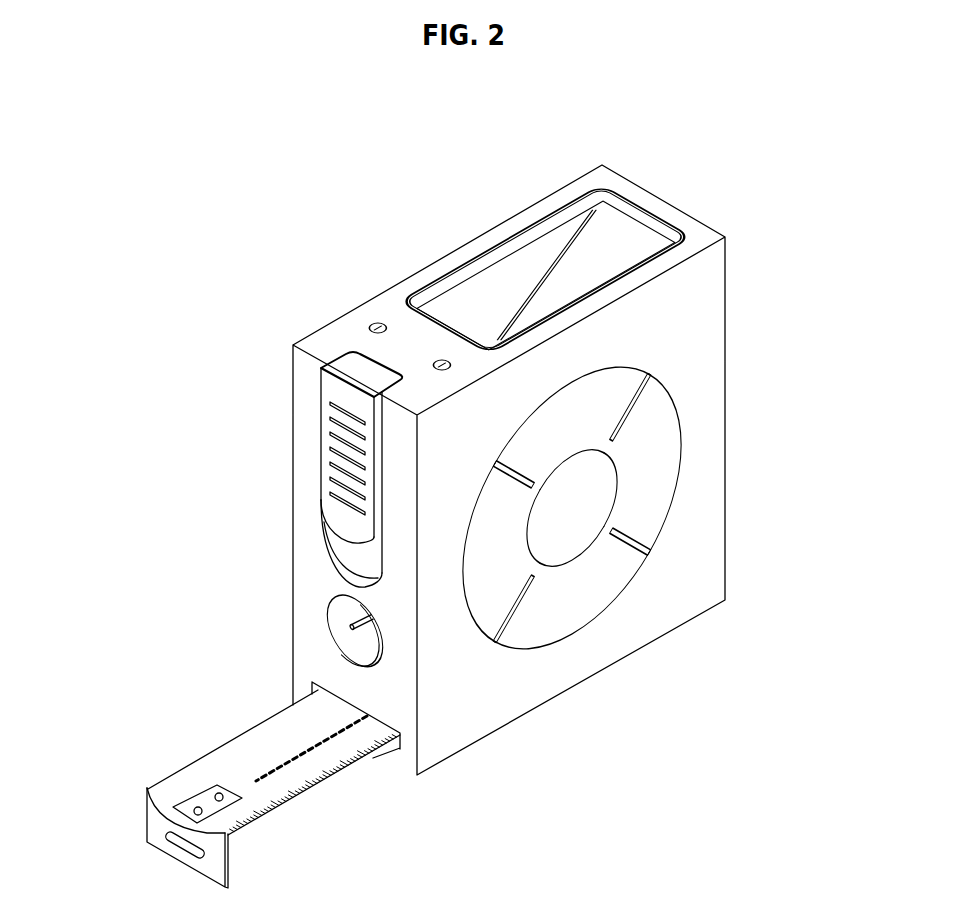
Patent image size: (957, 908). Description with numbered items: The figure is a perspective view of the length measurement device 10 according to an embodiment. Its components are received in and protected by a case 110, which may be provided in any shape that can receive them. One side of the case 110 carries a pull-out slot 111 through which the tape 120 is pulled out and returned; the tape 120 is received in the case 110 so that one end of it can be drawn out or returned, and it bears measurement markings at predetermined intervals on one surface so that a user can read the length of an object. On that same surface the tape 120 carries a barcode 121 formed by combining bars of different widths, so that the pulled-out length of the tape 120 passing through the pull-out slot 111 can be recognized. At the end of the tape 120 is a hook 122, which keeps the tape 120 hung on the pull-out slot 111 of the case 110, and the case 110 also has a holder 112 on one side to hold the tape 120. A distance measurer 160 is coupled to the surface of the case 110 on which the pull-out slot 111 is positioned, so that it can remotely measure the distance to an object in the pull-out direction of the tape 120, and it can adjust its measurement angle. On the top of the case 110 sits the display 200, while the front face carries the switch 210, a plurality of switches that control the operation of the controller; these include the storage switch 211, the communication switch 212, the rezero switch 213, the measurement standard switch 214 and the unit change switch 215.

The length measurement device 10 is at (683, 153).
The case 110 is at (707, 280).
The pull-out slot 111 is at (396, 742).
The holder 112 is at (327, 443).
The tape 120 is at (228, 789).
The barcode 121 is at (272, 762).
The hook 122 is at (153, 815).
The distance measurer 160 is at (333, 620).
The display 200 is at (533, 257).
The switch 210 is at (665, 489).
The storage switch 211 is at (386, 333).
The communication switch 212 is at (610, 388).
The rezero switch 213 is at (655, 433).
The measurement standard switch 214 is at (629, 549).
The unit change switch 215 is at (612, 565).